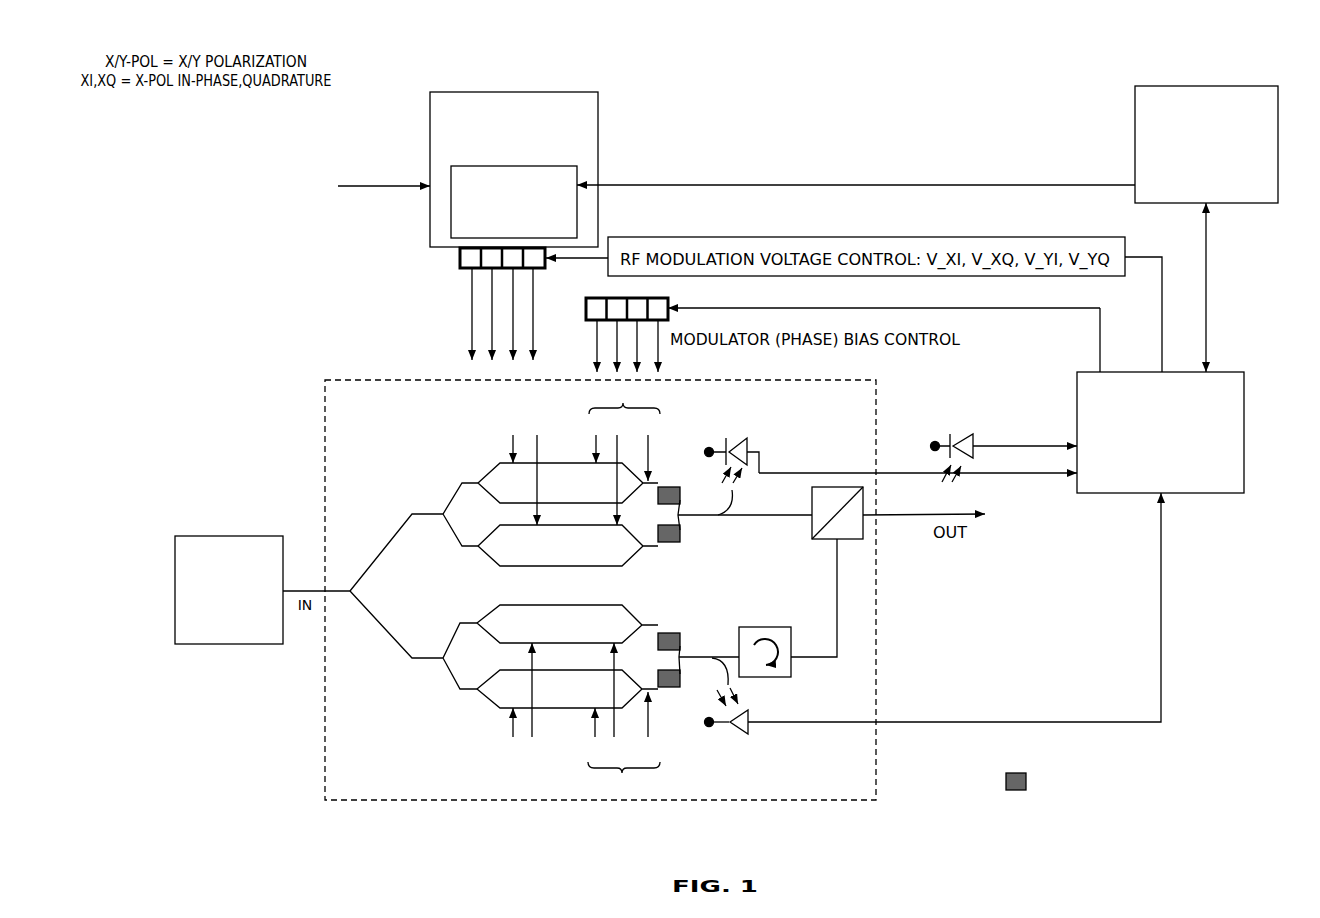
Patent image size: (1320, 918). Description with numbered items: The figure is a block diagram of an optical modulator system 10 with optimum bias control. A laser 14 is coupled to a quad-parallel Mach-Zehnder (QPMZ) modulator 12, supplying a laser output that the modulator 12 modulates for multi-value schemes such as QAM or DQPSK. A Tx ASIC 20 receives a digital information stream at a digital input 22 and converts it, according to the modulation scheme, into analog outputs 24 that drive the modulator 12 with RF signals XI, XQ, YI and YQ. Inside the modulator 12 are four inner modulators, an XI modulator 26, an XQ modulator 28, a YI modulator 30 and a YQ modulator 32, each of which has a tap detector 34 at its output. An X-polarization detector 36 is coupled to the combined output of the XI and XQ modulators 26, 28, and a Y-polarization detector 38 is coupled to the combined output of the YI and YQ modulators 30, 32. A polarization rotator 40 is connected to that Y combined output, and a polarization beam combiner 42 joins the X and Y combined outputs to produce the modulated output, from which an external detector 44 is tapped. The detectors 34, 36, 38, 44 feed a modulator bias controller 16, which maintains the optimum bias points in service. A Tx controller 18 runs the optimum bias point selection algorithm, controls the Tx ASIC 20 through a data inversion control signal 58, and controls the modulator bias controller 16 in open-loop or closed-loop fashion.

The optical modulator system 10 is at (895, 76).
The quad-parallel Mach-Zehnder (QPMZ) modulator 12 is at (323, 670).
The laser 14 is at (222, 535).
The modulator bias controller 16 is at (1118, 493).
The Tx controller 18 is at (1135, 105).
The Tx ASIC 20 is at (598, 130).
The digital input 22 is at (362, 186).
The analog outputs 24 is at (457, 270).
The XI modulator 26 is at (493, 468).
The XQ modulator 28 is at (493, 533).
The YI modulator 30 is at (490, 612).
The YQ modulator 32 is at (490, 677).
The detector 34 is at (1004, 781).
The X-polarization detector 36 is at (740, 463).
The Y-polarization detector 38 is at (747, 712).
The polarization rotator 40 is at (739, 638).
The polarization beam combiner 42 is at (812, 522).
The external detector 44 is at (972, 440).
The data inversion control signal 58 is at (912, 185).